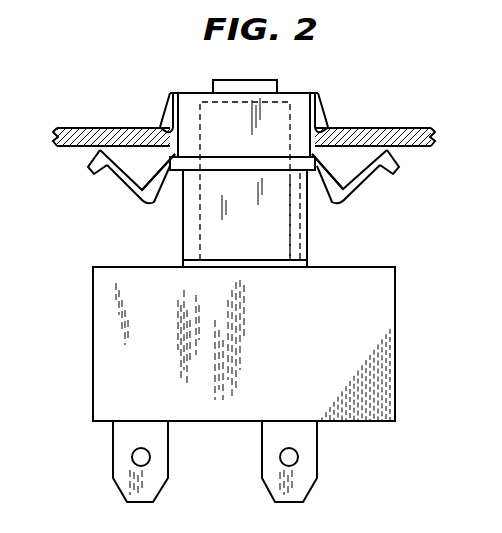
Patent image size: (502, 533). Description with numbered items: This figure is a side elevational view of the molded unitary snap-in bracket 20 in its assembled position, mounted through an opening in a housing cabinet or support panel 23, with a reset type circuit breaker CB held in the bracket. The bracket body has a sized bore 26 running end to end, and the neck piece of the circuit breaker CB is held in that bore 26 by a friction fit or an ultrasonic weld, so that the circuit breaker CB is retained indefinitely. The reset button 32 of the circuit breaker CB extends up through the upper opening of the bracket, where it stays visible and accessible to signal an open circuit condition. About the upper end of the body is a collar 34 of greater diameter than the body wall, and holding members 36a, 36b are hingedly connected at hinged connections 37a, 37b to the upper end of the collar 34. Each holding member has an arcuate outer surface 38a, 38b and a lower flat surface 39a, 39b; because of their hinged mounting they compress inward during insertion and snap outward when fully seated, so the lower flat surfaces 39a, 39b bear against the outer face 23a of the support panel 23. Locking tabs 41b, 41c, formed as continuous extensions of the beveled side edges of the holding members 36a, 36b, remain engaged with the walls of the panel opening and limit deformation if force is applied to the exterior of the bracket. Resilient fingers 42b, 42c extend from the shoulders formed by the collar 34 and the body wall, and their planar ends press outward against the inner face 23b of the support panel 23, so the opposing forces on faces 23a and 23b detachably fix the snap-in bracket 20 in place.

The snap-in bracket 20 is at (172, 237).
The support panel 23 is at (48, 134).
The outer face 23a is at (78, 127).
The inner face 23b is at (78, 148).
The bore 26 is at (258, 236).
The reset button 32 is at (277, 80).
The collar 34 is at (297, 93).
The holding member 36a is at (167, 110).
The holding member 36b is at (325, 110).
The hinged connection 37a is at (180, 93).
The hinged connection 37b is at (317, 93).
The arcuate outer surface 38a is at (168, 93).
The arcuate outer surface 38b is at (322, 98).
The lower flat surface 39a is at (160, 124).
The lower flat surface 39b is at (328, 123).
The locking tab 41b is at (168, 153).
The locking tab 41c is at (320, 150).
The resilient finger 42b is at (120, 196).
The resilient finger 42c is at (364, 203).
The circuit breaker CB is at (408, 341).